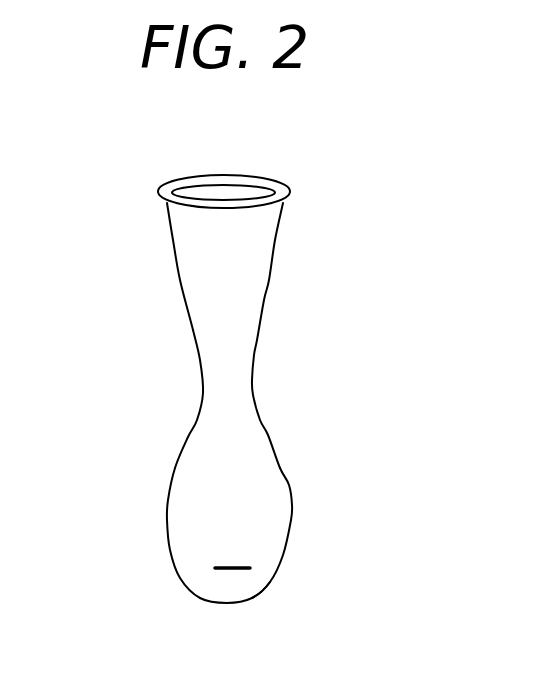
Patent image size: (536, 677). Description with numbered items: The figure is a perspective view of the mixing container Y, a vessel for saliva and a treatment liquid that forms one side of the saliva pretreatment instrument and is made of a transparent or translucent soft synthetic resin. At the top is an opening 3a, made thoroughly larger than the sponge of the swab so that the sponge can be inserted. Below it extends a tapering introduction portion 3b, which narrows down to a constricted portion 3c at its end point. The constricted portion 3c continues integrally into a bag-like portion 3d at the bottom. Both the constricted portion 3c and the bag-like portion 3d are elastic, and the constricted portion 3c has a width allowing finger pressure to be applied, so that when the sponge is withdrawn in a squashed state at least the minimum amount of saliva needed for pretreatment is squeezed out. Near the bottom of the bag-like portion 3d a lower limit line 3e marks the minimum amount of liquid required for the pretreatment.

The opening 3a is at (243, 175).
The tapering introduction portion 3b is at (248, 245).
The constricted portion 3c is at (243, 390).
The bag-like portion 3d is at (240, 448).
The lower limit line 3e is at (232, 568).
The mixing container Y is at (266, 597).